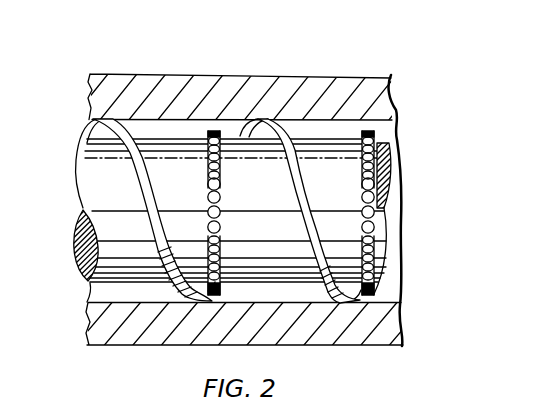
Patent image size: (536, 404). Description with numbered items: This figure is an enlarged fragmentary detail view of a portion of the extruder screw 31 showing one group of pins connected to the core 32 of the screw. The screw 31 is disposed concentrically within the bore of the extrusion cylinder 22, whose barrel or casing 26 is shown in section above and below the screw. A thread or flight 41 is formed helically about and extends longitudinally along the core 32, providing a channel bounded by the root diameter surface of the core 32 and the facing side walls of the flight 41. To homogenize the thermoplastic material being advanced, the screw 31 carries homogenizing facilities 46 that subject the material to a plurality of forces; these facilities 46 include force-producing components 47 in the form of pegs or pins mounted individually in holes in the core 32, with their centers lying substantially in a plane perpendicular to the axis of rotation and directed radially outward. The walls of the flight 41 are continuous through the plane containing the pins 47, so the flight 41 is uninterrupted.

The extrusion cylinder 22 is at (152, 63).
The barrel or casing 26 is at (114, 345).
The extruder screw 31 is at (338, 130).
The core 32 is at (88, 190).
The flight 41 is at (356, 300).
The homogenizing facilities 46 is at (226, 158).
The force-producing components 47 is at (208, 183).